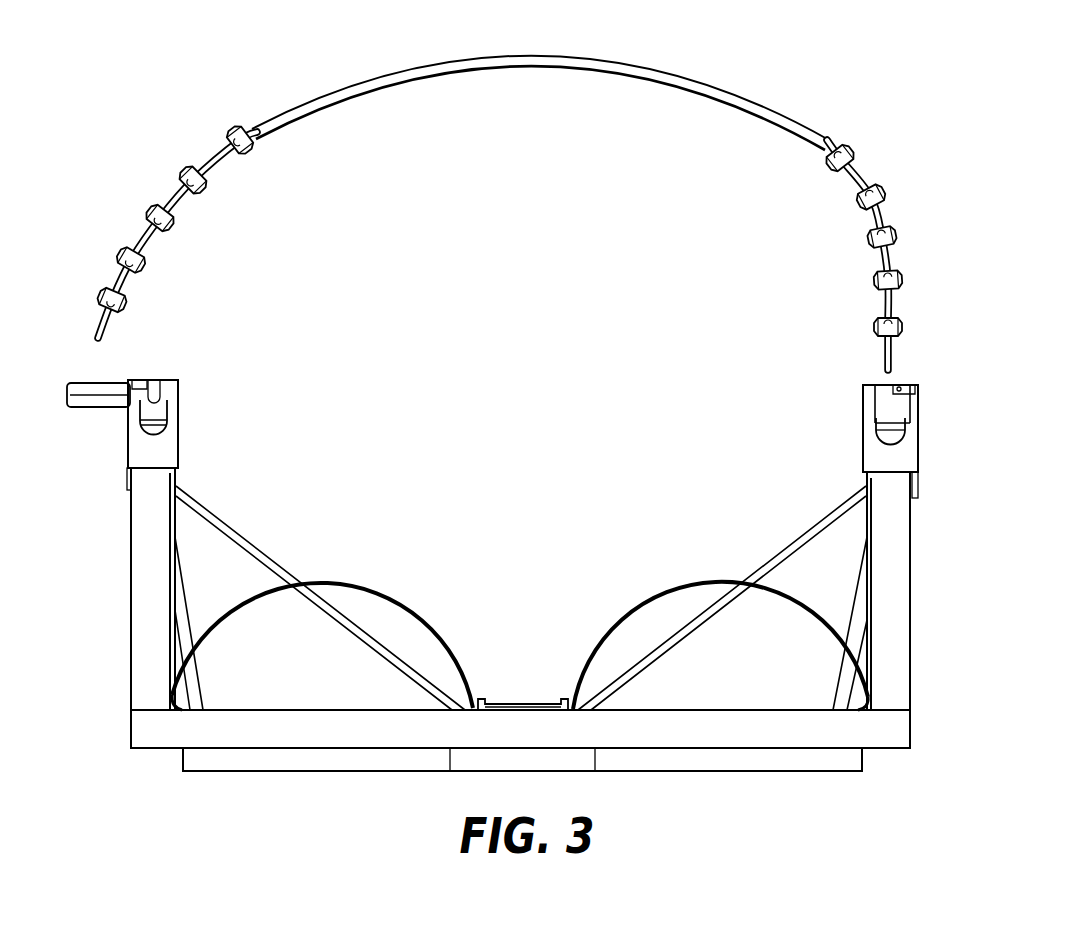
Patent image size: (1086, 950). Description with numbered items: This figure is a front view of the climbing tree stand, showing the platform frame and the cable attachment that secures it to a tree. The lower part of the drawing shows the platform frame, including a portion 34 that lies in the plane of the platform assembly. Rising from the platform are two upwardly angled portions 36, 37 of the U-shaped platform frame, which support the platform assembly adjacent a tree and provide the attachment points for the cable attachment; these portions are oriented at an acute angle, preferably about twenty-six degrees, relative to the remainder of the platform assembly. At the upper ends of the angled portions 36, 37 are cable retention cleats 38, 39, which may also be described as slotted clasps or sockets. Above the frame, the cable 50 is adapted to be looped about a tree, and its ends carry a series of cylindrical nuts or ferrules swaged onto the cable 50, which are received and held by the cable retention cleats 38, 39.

The cable 50 is at (563, 70).
The cable retention cleat 39 is at (188, 432).
The cable retention cleat 38 is at (933, 437).
The upwardly angled portion 37 is at (152, 571).
The upwardly angled portion 36 is at (892, 577).
The portion of U-shaped platform frame 34 is at (527, 732).